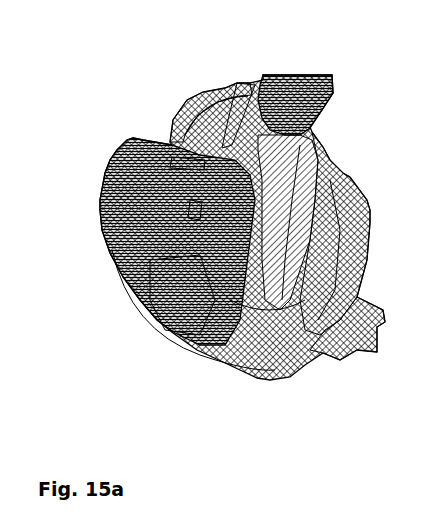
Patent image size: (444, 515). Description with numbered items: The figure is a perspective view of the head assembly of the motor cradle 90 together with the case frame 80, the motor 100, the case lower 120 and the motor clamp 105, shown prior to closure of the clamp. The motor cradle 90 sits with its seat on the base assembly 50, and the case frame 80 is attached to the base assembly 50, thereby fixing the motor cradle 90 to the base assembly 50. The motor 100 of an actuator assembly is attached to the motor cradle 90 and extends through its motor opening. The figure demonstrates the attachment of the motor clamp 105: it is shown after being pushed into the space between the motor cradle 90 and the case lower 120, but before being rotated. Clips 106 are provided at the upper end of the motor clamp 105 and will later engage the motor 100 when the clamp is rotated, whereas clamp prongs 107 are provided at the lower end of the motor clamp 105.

The base assembly 50 is at (334, 355).
The case frame 80 is at (319, 200).
The motor cradle 90 is at (333, 88).
The motor 100 is at (282, 145).
The motor clamp 105 is at (187, 108).
The clips 106 is at (247, 82).
The clamp prongs 107 is at (167, 310).
The case lower 120 is at (107, 193).